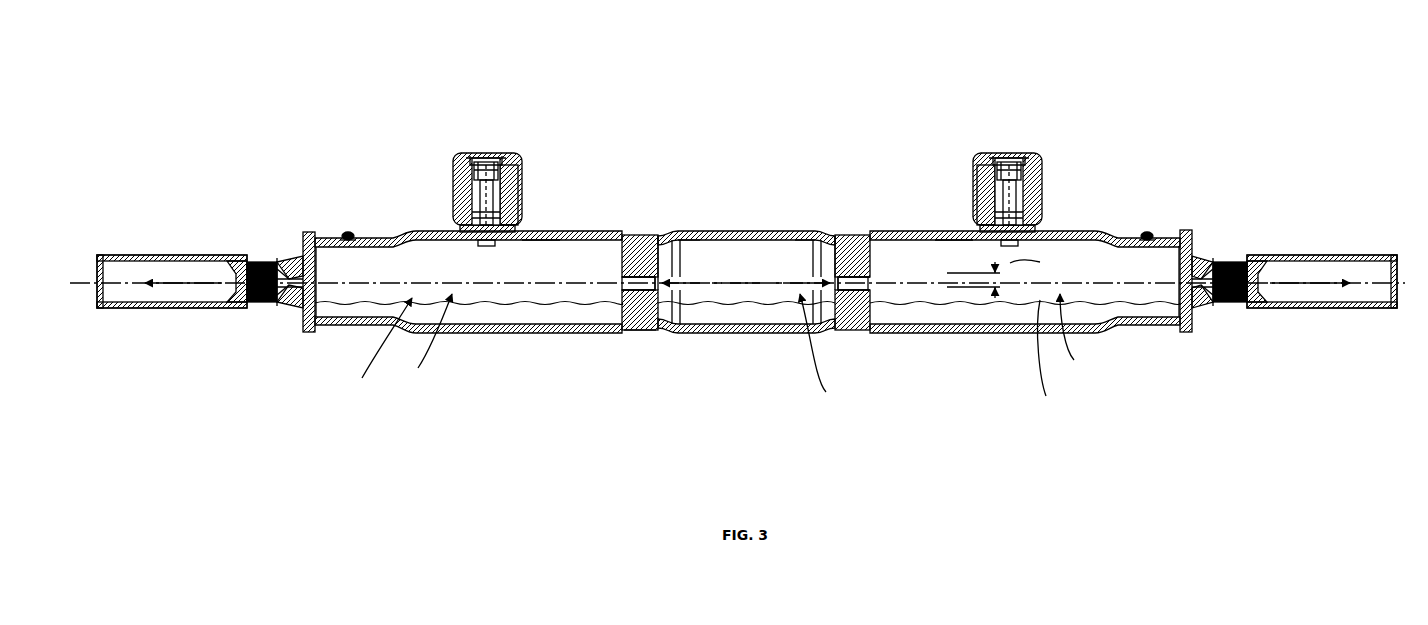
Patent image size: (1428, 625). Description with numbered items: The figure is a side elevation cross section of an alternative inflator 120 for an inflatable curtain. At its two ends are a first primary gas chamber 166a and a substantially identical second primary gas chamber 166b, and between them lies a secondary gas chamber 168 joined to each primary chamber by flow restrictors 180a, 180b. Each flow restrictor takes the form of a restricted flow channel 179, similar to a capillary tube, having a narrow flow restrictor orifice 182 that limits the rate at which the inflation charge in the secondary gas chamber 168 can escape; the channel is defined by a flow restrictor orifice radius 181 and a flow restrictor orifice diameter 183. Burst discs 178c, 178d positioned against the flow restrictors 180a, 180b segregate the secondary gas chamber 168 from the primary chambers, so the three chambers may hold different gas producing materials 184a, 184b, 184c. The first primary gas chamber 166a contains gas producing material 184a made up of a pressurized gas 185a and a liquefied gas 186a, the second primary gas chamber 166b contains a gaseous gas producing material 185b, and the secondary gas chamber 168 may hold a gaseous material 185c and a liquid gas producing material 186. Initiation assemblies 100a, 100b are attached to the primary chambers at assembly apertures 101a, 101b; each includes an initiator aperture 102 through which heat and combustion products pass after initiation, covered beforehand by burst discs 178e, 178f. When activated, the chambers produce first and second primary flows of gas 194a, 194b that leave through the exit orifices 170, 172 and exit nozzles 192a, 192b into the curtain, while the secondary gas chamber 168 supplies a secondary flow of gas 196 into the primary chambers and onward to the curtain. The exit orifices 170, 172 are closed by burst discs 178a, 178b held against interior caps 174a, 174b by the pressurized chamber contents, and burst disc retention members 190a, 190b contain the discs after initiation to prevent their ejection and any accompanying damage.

The inflator 120 is at (1195, 156).
The initiation assembly 100a is at (994, 159).
The initiation assembly 100b is at (501, 168).
The assembly aperture 101a is at (936, 240).
The assembly aperture 101b is at (546, 240).
The initiator aperture 102 is at (627, 238).
The secondary flow of gas 196 is at (674, 262).
The burst disc 178a is at (1178, 276).
The burst disc 178b is at (318, 279).
The burst disc 178c is at (822, 237).
The burst disc 178d is at (669, 237).
The burst disc 178e is at (1010, 245).
The burst disc 178f is at (487, 246).
The flow restrictor orifice 182 is at (626, 284).
The flow restrictor orifice diameter 183 is at (994, 290).
The flow restrictor orifice radius 181 is at (1012, 264).
The burst disc retention member 190a is at (1215, 262).
The burst disc retention member 190b is at (277, 258).
The interior cap 174a is at (1195, 258).
The interior cap 174b is at (292, 258).
The first primary flow of gas 194a is at (1335, 288).
The second primary flow of gas 194b is at (176, 288).
The exit nozzle 192a is at (1232, 303).
The exit nozzle 192b is at (270, 303).
The exit orifice 172 is at (308, 334).
The exit orifice 170 is at (1196, 334).
The pressurized gas 185a is at (1058, 356).
The gaseous gas producing material 185b is at (369, 344).
The gaseous gas producing material 185c is at (712, 300).
The gas producing material 184a is at (1084, 332).
The gas producing material 184b is at (418, 336).
The gas producing material 184c is at (831, 349).
The first primary gas chamber 166a is at (1118, 326).
The second primary gas chamber 166b is at (452, 335).
The restricted flow channel 179 is at (636, 332).
The flow restrictor 180a is at (848, 332).
The flow restrictor 180b is at (648, 332).
The liquid gas producing material 186 is at (718, 305).
The liquefied gas 186a is at (1126, 304).
The secondary gas chamber 168 is at (750, 334).